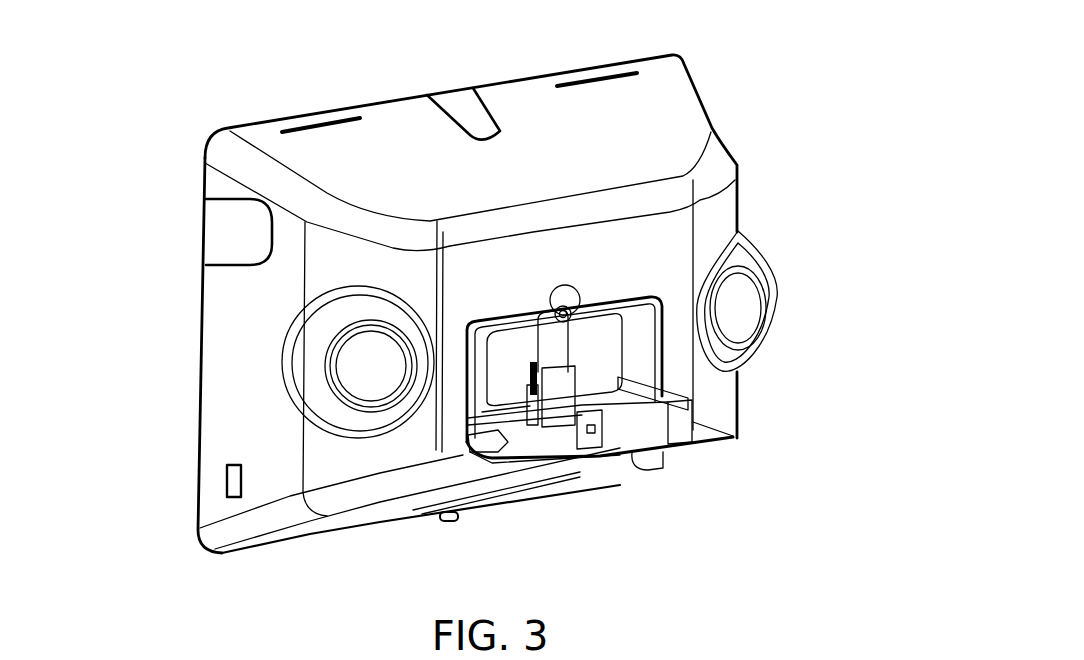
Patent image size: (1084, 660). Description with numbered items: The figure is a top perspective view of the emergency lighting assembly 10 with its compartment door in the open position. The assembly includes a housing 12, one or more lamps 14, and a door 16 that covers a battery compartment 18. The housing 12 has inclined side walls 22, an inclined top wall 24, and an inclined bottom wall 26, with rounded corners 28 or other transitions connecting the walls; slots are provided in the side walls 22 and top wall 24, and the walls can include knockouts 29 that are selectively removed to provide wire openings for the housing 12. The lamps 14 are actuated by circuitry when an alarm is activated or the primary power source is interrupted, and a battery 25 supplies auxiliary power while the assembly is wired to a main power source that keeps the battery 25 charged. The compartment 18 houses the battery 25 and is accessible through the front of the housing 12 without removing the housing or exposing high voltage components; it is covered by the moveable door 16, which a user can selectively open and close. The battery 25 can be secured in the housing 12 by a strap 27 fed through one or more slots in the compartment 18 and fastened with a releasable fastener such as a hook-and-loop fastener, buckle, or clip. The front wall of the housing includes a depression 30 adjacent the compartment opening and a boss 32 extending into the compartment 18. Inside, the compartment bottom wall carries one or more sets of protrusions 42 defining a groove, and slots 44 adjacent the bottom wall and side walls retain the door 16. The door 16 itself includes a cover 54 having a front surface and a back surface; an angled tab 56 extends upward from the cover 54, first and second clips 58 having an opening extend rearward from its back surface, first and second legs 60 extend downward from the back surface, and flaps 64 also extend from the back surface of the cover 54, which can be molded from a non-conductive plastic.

The emergency lighting assembly 10 is at (163, 91).
The housing 12 is at (657, 53).
The lamps 14 is at (785, 279).
The door 16 is at (743, 439).
The battery compartment 18 is at (642, 313).
The side walls 22 is at (217, 358).
The top wall 24 is at (272, 142).
The battery 25 is at (503, 353).
The bottom wall 26 is at (292, 535).
The strap 27 is at (547, 337).
The rounded corners 28 is at (318, 460).
The knockouts 29 is at (225, 233).
The depression 30 is at (567, 293).
The boss 32 is at (570, 315).
The protrusions 42 is at (668, 445).
The slots 44 is at (660, 378).
The cover 54 is at (560, 452).
The angled tab 56 is at (653, 440).
The clips 58 is at (596, 448).
The legs 60 is at (458, 432).
The flaps 64 is at (505, 435).